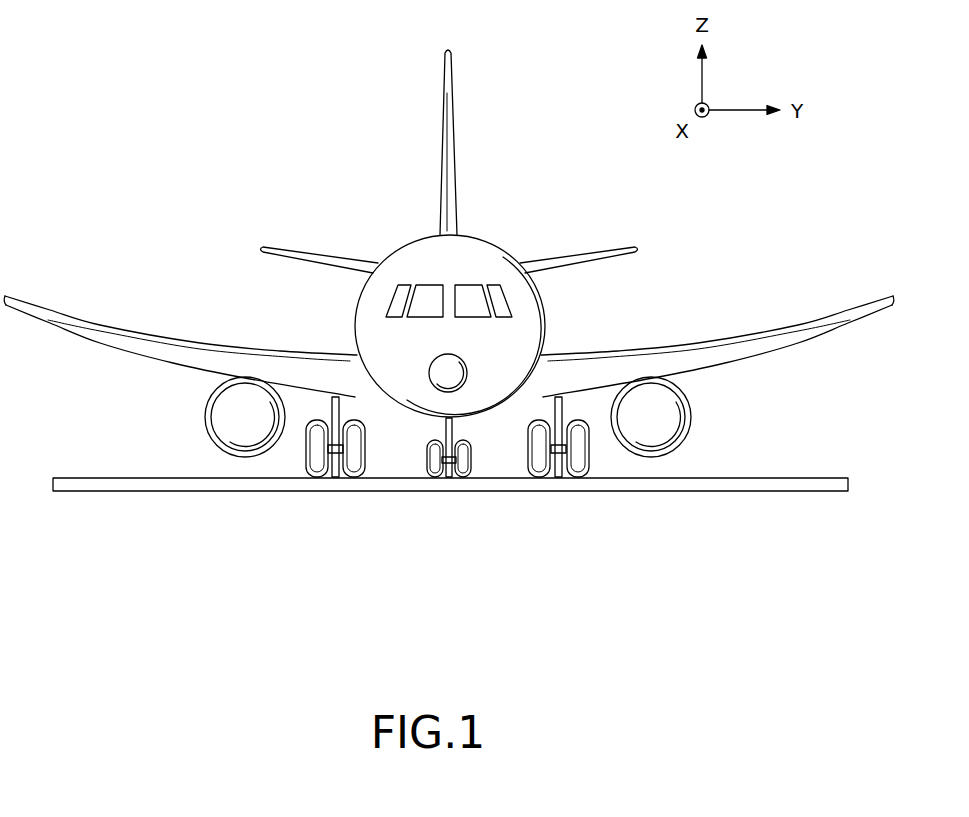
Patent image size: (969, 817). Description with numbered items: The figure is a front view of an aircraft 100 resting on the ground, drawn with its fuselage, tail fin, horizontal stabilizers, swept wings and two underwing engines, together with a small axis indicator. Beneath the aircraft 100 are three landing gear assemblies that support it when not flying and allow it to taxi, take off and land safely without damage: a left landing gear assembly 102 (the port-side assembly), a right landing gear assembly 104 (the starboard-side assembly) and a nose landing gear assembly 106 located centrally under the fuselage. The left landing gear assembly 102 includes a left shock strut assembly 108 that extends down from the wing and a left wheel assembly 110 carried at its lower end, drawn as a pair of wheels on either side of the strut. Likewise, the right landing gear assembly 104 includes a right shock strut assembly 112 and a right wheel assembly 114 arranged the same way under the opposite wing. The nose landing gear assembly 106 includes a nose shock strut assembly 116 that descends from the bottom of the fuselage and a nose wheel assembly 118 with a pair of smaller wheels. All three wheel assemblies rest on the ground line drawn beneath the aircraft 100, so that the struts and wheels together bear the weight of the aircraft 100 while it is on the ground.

The aircraft 100 is at (286, 139).
The left landing gear assembly 102 is at (627, 473).
The right landing gear assembly 104 is at (280, 437).
The nose landing gear assembly 106 is at (409, 501).
The left shock strut assembly 108 is at (547, 502).
The left wheel assembly 110 is at (558, 453).
The right shock strut assembly 112 is at (328, 437).
The right wheel assembly 114 is at (336, 478).
The nose shock strut assembly 116 is at (452, 418).
The nose wheel assembly 118 is at (447, 478).